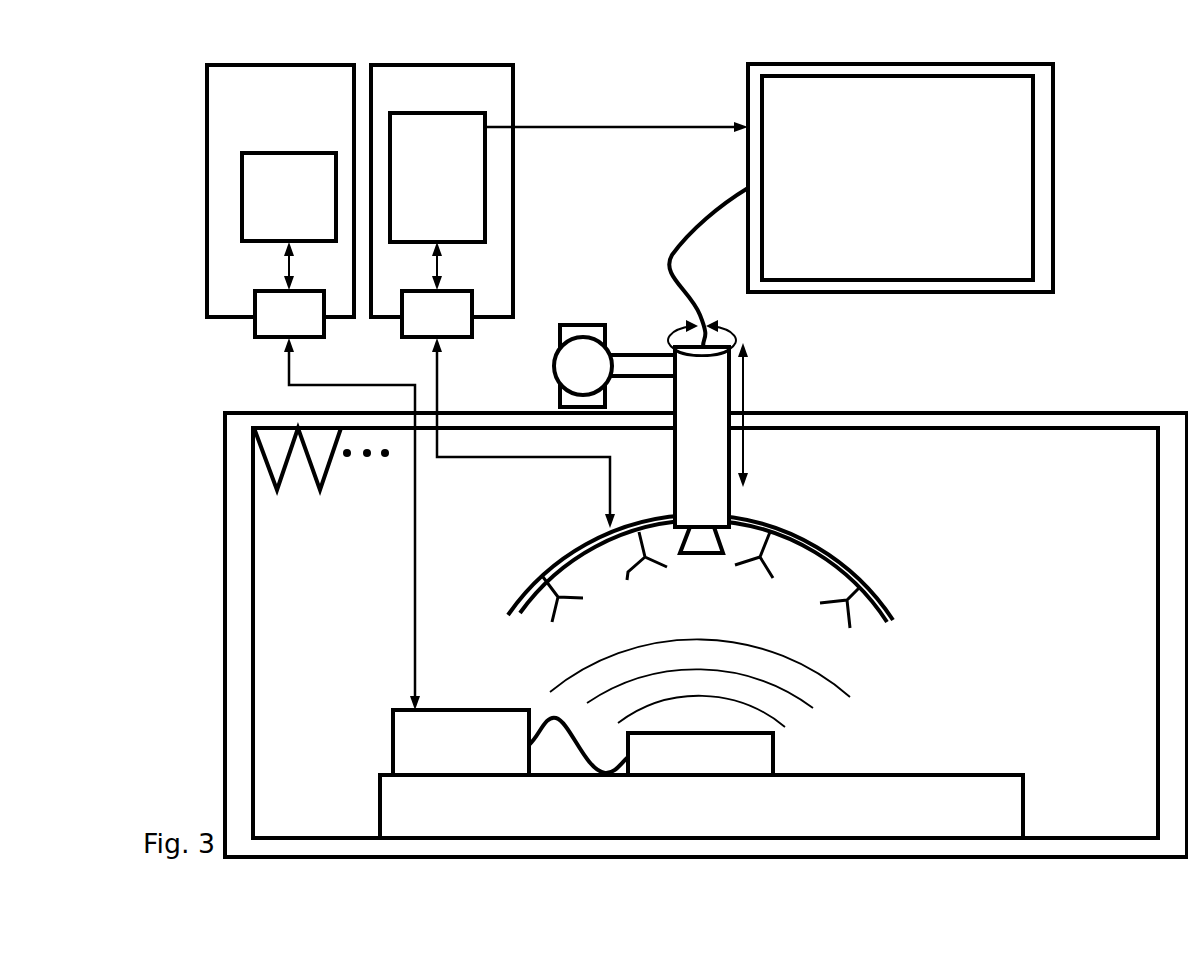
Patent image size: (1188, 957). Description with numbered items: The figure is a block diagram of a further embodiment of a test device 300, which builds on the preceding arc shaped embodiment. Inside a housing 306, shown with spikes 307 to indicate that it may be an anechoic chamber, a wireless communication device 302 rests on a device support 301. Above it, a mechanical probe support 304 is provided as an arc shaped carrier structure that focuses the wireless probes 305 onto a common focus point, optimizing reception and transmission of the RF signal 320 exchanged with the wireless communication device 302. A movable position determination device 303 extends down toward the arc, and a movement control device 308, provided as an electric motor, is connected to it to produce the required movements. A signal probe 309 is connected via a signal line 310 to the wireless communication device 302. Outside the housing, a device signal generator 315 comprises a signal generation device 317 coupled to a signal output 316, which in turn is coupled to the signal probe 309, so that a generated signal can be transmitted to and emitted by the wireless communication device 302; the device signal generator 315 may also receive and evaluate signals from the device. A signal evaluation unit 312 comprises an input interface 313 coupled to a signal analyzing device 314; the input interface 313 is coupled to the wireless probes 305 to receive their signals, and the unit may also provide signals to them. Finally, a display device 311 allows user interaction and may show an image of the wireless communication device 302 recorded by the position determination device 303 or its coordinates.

The test device 300 is at (1096, 303).
The device support 301 is at (1017, 810).
The wireless communication device 302 is at (775, 758).
The movable position determination device 303 is at (720, 503).
The mechanical probe support 304 is at (832, 547).
The wireless probe 305 is at (820, 603).
The housing 306 is at (868, 413).
The spike 307 is at (322, 462).
The movement control device 308 is at (562, 372).
The signal probe 309 is at (400, 712).
The signal line 310 is at (547, 716).
The display device 311 is at (748, 167).
The signal evaluation unit 312 is at (508, 268).
The input interface 313 is at (472, 323).
The signal analyzing device 314 is at (513, 185).
The device signal generator 315 is at (208, 316).
The signal output 316 is at (268, 338).
The signal generation device 317 is at (242, 180).
The RF signal 320 is at (847, 673).